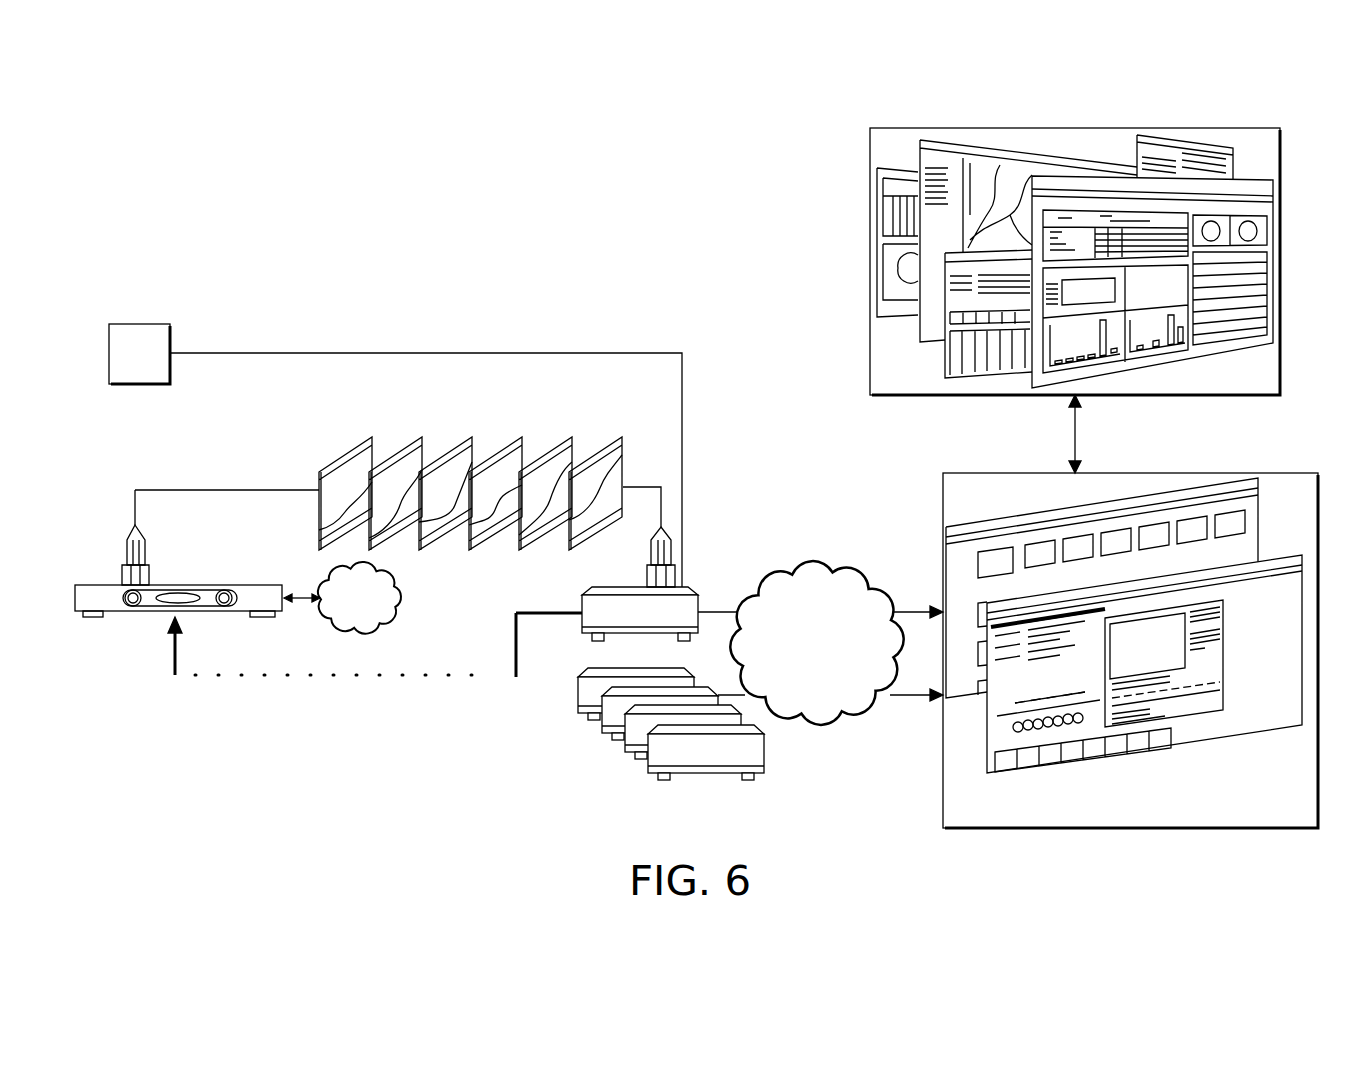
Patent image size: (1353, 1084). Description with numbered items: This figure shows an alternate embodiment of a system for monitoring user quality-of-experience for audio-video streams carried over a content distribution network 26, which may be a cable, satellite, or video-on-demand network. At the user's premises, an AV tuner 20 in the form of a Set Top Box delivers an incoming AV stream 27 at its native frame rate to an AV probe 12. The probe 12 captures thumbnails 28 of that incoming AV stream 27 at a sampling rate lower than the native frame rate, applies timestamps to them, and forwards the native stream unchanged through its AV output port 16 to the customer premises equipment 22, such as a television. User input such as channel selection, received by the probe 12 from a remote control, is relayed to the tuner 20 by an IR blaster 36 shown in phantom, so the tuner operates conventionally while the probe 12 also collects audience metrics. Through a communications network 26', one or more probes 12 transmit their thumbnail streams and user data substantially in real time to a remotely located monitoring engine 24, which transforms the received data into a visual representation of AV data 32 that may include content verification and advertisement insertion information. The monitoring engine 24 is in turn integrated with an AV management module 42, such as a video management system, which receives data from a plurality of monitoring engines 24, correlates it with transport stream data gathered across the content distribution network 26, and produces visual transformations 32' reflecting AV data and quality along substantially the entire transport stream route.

The AV probe 12 is at (582, 627).
The AV output port 16 is at (684, 586).
The AV tuner 20 is at (128, 600).
The customer premises equipment 22 is at (126, 367).
The monitoring engine 24 is at (957, 505).
The content distribution network 26 is at (342, 598).
The communications network 26' is at (820, 643).
The incoming AV stream 27 is at (135, 488).
The thumbnails 28 is at (347, 413).
The visual representation of AV data 32 is at (1128, 604).
The visual transformations 32' is at (1080, 238).
The IR blaster 36 is at (300, 683).
The AV management module 42 is at (870, 160).